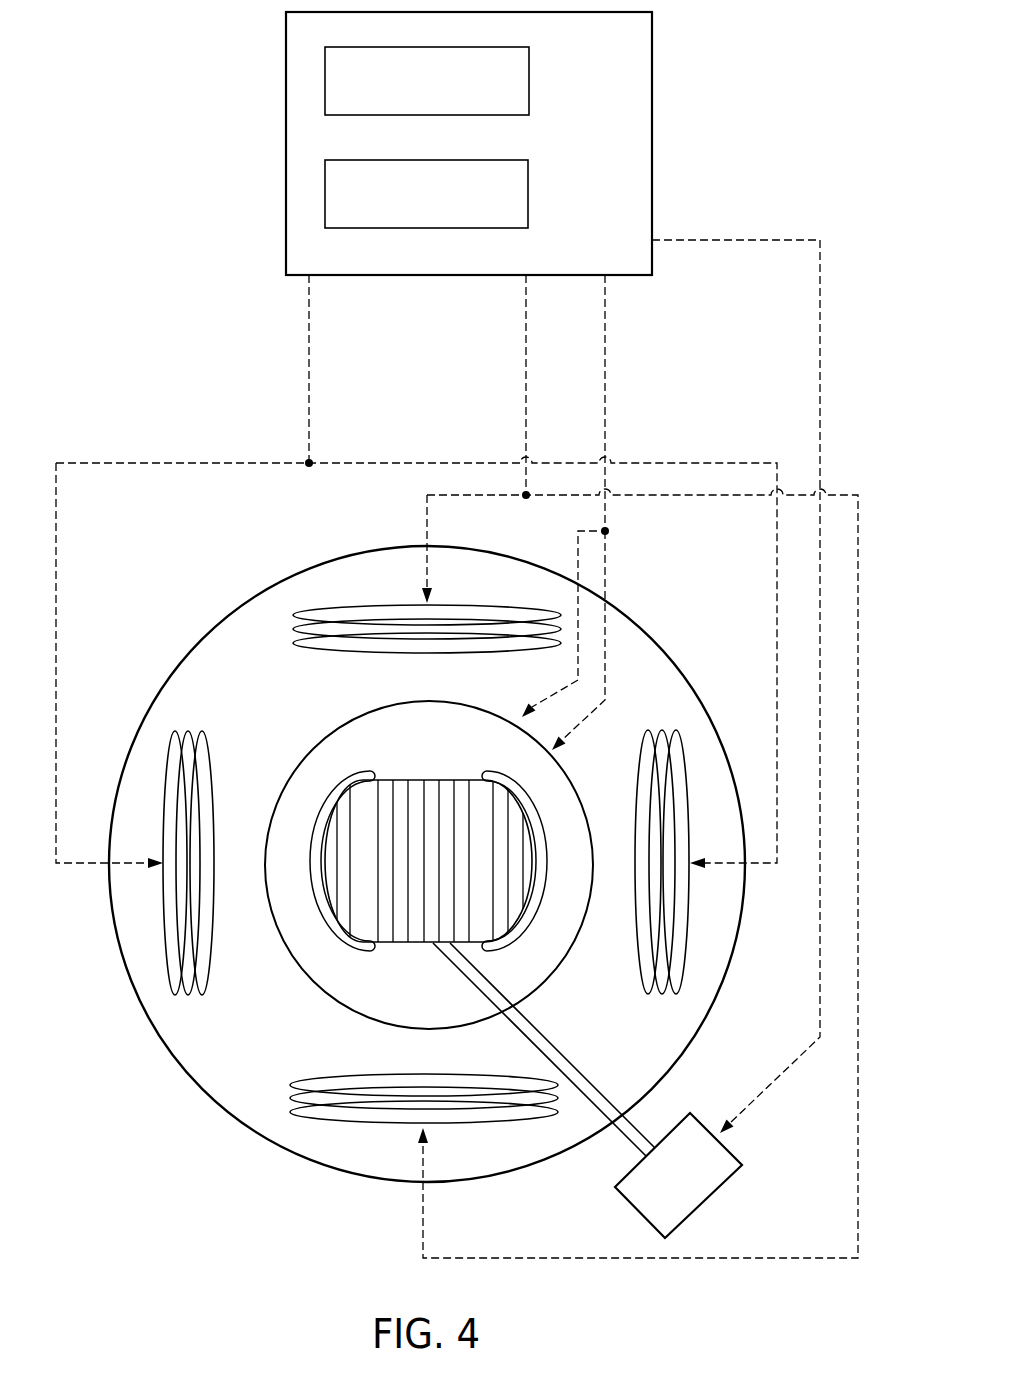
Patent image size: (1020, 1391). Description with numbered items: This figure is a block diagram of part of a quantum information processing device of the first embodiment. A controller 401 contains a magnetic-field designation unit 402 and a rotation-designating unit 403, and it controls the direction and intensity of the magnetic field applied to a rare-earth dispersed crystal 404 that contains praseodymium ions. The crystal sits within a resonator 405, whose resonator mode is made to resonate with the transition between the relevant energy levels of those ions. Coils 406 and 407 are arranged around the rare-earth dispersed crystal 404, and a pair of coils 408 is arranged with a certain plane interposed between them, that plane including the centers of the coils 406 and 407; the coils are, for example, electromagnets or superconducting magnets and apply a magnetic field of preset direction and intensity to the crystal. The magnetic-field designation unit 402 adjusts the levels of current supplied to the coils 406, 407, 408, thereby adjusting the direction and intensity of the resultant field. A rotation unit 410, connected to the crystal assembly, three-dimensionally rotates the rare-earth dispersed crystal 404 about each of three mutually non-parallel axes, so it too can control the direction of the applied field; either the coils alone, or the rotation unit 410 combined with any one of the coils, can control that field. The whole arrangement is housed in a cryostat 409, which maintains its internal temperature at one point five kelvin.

The controller 401 is at (652, 142).
The magnetic-field designation unit 402 is at (529, 78).
The rotation-designating unit 403 is at (529, 190).
The rare-earth dispersed crystal 404 is at (378, 793).
The resonator 405 is at (332, 925).
The coil 406 is at (511, 605).
The coil 407 is at (213, 735).
The coil 408 is at (342, 722).
The cryostat 409 is at (645, 641).
The rotation unit 410 is at (716, 1193).